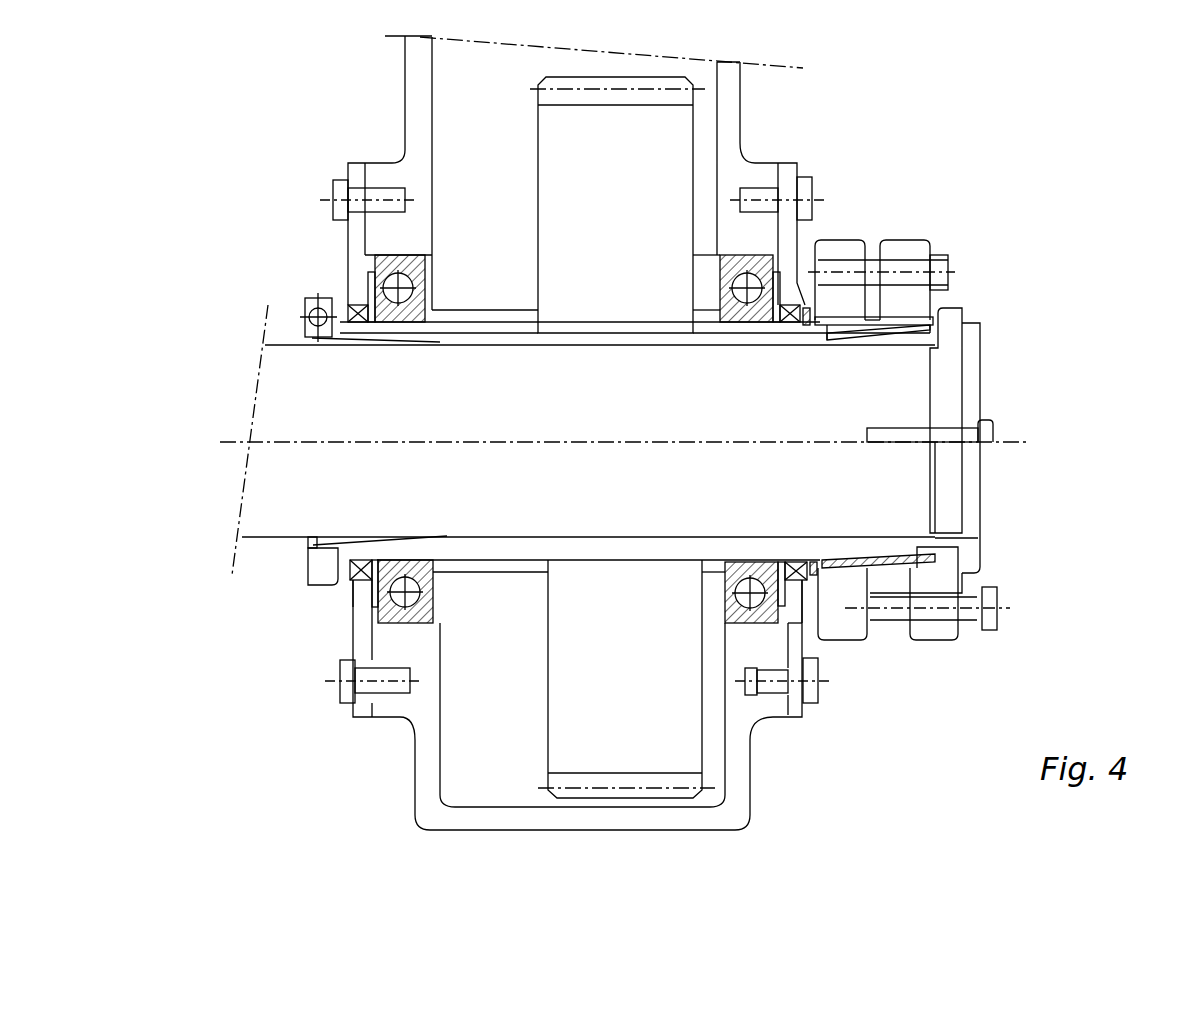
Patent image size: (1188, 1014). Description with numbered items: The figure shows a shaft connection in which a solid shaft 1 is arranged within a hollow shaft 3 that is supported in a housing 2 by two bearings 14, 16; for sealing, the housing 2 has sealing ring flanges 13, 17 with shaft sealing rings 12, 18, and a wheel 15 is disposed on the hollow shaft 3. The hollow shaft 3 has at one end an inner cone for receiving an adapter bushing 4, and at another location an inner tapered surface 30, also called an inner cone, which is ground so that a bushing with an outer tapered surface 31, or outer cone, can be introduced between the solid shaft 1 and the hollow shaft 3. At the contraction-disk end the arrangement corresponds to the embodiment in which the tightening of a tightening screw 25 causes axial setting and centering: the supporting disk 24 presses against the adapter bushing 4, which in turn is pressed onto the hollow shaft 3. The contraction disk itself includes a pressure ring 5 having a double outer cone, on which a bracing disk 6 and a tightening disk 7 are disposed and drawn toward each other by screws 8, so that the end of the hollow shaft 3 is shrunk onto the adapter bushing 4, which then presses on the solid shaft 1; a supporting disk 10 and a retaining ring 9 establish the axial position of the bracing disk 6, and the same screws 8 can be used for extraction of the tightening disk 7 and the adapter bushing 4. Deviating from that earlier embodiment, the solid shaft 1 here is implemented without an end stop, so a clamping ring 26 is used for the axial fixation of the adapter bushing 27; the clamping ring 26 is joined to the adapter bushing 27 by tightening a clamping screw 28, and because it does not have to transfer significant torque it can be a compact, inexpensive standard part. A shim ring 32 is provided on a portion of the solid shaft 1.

The solid shaft 1 is at (328, 473).
The housing 2 is at (750, 740).
The hollow shaft 3 is at (750, 548).
The adapter bushing 4 is at (950, 333).
The pressure ring 5 is at (950, 300).
The bracing disk 6 is at (850, 240).
The tightening disk 7 is at (930, 237).
The screws 8 is at (935, 298).
The retaining ring 9 is at (817, 563).
The supporting disk 10 is at (887, 557).
The shaft sealing ring 12 is at (352, 580).
The sealing ring flange 13 is at (357, 600).
The bearing 14 is at (405, 592).
The wheel 15 is at (702, 735).
The bearing 16 is at (760, 628).
The sealing ring flange 17 is at (752, 598).
The shaft sealing ring 18 is at (803, 575).
The supporting disk 24 is at (968, 377).
The tightening screw 25 is at (870, 432).
The clamping ring 26 is at (333, 572).
The adapter bushing 27 is at (333, 540).
The clamping screw 28 is at (305, 300).
The inner tapered surface 30 is at (855, 348).
The outer tapered surface 31 is at (923, 350).
The shim ring 32 is at (930, 322).